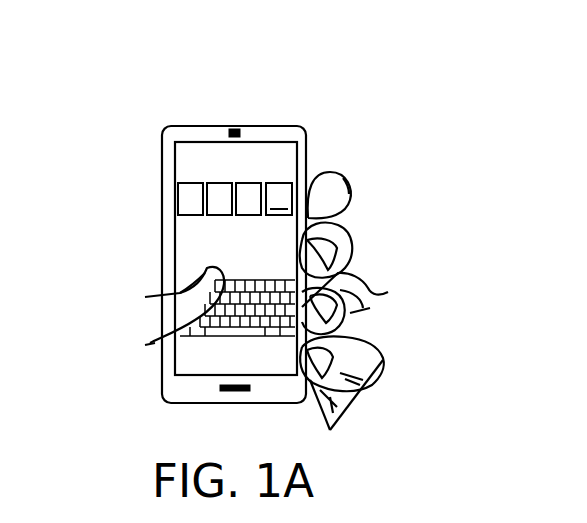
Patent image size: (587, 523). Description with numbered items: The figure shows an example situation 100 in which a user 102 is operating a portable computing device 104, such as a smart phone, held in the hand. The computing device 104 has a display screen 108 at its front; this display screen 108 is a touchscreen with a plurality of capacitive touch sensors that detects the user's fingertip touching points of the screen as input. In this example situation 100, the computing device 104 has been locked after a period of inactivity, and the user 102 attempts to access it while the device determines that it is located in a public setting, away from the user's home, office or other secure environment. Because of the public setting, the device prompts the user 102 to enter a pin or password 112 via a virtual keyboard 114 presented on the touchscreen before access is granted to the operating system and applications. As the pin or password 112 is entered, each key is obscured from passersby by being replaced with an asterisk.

The example situation 100 is at (488, 102).
The user 102 is at (373, 295).
The computing device 104 is at (162, 138).
The display screen 108 is at (198, 142).
The pin or password 112 is at (273, 176).
The virtual keyboard 114 is at (238, 270).